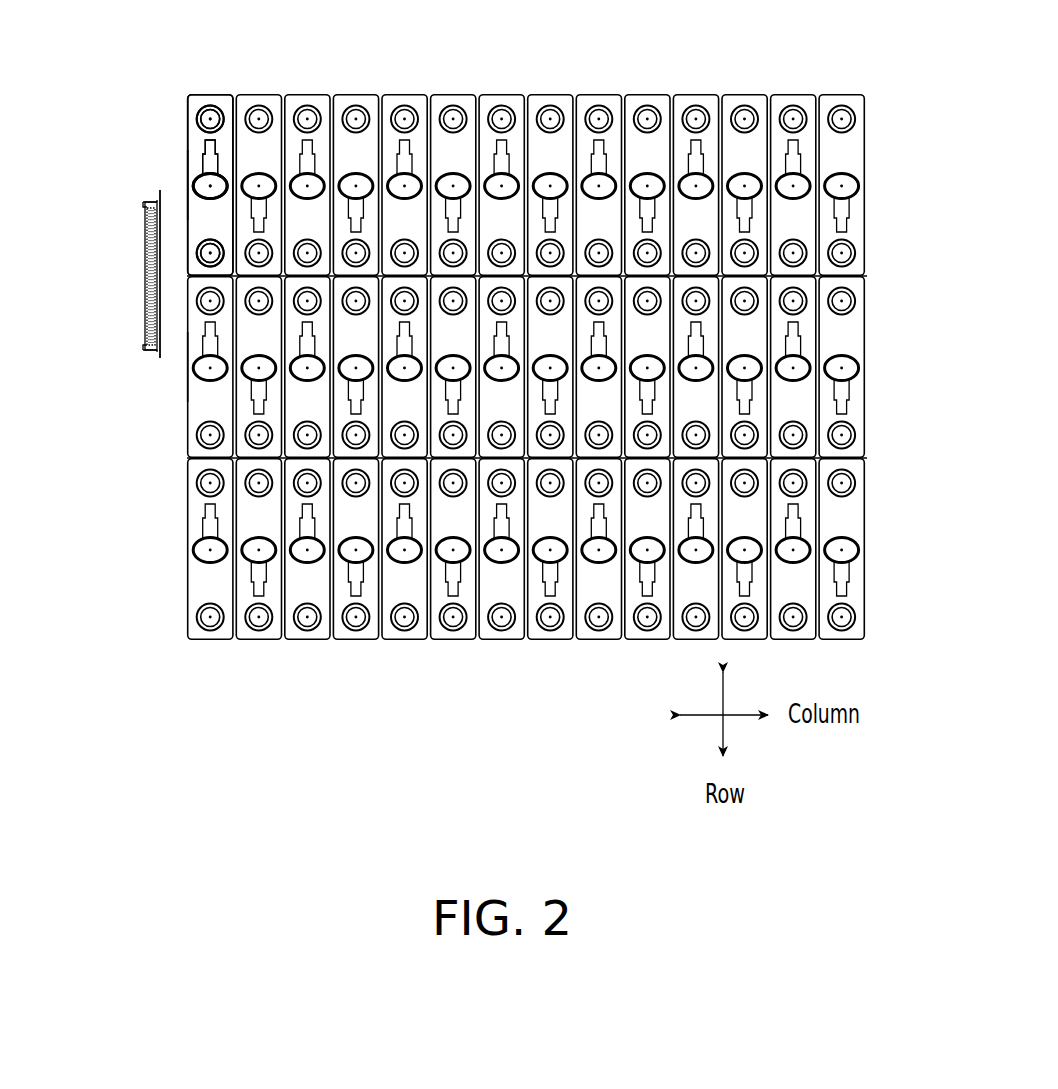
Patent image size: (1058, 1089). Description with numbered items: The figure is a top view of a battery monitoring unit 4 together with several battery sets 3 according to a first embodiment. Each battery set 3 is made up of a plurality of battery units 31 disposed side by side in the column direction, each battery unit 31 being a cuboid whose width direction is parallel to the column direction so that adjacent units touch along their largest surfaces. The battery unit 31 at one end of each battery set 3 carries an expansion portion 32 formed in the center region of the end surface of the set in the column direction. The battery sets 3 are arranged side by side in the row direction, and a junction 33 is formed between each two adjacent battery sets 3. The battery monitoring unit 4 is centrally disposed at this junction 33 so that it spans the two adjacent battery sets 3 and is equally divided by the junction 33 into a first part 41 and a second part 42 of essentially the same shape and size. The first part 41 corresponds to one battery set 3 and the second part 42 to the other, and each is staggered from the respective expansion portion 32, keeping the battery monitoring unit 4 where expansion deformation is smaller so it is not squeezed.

The battery set 3 is at (880, 170).
The battery unit 31 is at (225, 103).
The expansion portion 32 is at (186, 185).
The junction 33 is at (871, 274).
The battery monitoring unit 4 is at (143, 270).
The first part 41 is at (143, 204).
The second part 42 is at (147, 347).